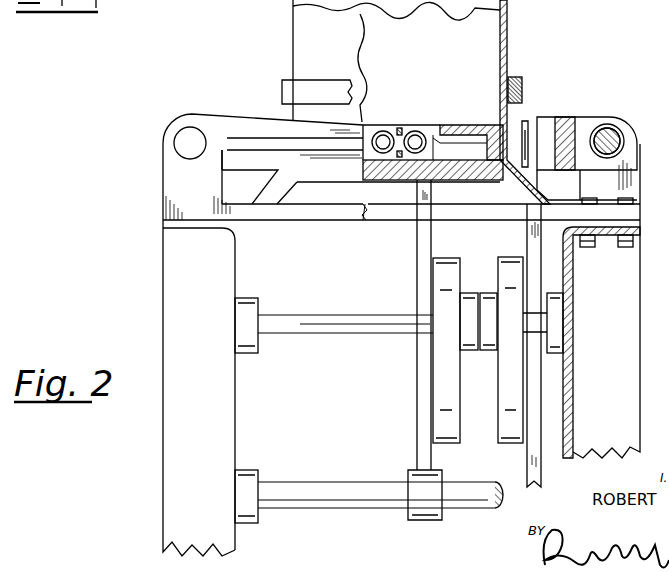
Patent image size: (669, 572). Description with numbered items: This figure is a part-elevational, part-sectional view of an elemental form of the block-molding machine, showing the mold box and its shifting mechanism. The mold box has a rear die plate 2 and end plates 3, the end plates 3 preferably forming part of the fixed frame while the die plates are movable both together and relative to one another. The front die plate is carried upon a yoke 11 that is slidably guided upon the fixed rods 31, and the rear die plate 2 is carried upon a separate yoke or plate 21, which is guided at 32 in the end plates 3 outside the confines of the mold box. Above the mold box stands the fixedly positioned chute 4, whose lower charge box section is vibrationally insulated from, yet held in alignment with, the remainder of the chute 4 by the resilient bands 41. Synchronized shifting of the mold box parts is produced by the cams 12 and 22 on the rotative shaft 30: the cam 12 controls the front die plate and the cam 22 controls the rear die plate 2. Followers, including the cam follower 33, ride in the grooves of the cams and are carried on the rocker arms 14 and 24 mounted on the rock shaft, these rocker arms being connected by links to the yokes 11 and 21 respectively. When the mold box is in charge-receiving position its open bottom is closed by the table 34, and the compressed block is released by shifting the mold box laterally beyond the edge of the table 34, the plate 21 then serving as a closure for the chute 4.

The rear die plate 2 is at (381, 125).
The end plates 3 is at (520, 140).
The chute 4 is at (507, 20).
The yoke 11 is at (270, 135).
The cam 12 is at (503, 258).
The rocker arm 14 is at (528, 457).
The yoke or plate 21 is at (455, 125).
The cam 22 is at (447, 278).
The rocker arm 24 is at (417, 431).
The rotative shaft 30 is at (287, 317).
The fixed rods 31 is at (622, 136).
The guide 32 is at (512, 125).
The cam follower / rock shaft 33 is at (322, 503).
The table 34 is at (455, 160).
The resilient bands 41 is at (318, 85).